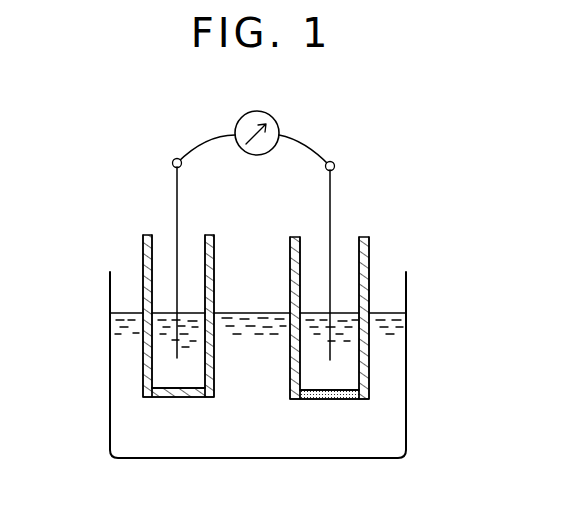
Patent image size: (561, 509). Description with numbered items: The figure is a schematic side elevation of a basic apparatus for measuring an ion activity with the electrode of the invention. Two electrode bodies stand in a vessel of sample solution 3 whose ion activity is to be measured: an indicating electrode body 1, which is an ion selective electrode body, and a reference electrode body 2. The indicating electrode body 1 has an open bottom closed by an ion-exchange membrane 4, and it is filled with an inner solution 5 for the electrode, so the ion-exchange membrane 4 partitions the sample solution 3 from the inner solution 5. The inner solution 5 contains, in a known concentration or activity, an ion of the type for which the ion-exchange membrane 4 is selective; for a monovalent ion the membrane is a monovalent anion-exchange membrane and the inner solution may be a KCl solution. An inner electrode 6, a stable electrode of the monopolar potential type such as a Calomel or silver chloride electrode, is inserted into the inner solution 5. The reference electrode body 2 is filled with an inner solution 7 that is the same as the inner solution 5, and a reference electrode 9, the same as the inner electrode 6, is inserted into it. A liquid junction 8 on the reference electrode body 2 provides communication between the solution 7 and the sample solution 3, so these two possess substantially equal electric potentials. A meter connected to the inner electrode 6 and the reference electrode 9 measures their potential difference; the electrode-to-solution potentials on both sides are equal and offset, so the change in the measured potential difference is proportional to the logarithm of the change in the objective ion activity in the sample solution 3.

The indicating electrode body 1 is at (370, 260).
The reference electrode body 2 is at (142, 258).
The sample solution 3 is at (244, 446).
The ion-exchange membrane 4 is at (345, 400).
The inner solution for the electrode 5 is at (340, 377).
The inner electrode 6 is at (331, 355).
The inner solution for the reference electrode 7 is at (162, 373).
The liquid junction 8 is at (173, 400).
The reference electrode 9 is at (176, 356).